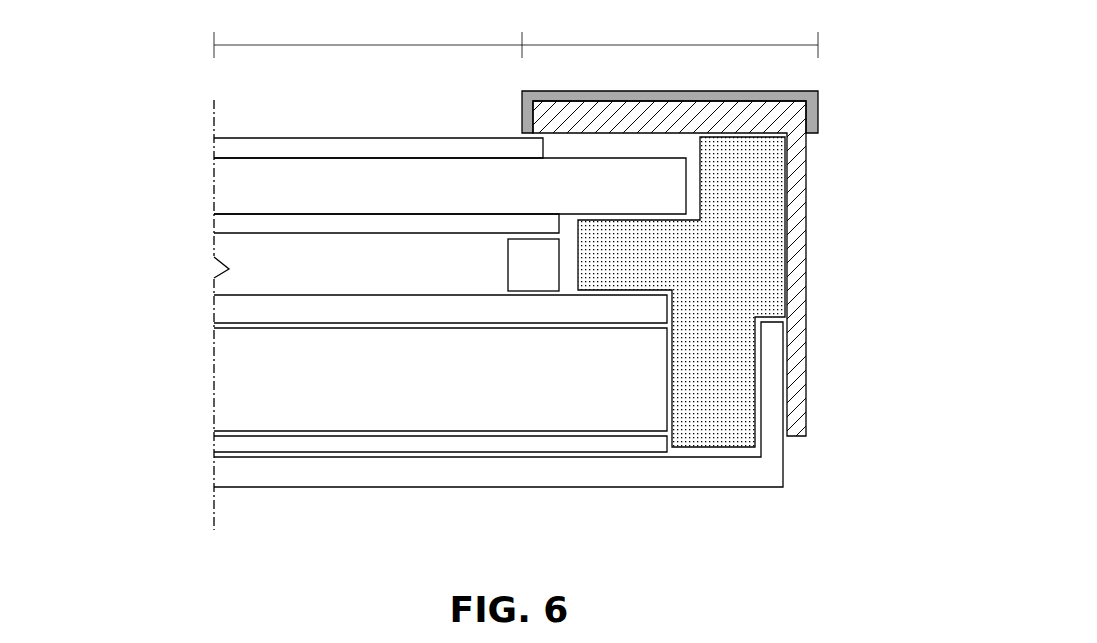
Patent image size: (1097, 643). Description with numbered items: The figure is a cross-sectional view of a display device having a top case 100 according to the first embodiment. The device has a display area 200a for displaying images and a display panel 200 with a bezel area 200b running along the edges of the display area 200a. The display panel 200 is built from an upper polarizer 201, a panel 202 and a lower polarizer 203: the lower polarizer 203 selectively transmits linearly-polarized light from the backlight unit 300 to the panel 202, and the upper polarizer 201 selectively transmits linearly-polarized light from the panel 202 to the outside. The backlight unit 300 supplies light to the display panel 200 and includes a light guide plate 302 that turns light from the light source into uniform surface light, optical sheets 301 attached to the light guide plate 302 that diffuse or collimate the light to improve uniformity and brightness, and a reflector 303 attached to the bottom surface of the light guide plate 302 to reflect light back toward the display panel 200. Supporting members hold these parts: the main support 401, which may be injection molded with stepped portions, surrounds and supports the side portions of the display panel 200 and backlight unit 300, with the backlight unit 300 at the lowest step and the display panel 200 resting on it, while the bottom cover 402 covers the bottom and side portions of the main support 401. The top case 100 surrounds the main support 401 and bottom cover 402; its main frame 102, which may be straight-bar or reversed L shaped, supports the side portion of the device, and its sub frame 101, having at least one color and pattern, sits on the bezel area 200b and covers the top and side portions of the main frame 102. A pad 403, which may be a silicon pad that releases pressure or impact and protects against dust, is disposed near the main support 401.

The top case 100 is at (733, 263).
The sub frame 101 is at (812, 112).
The main frame 102 is at (800, 176).
The display panel 200 is at (382, 188).
The display area 200a is at (368, 42).
The bezel area 200b is at (670, 42).
The upper polarizer 201 is at (240, 149).
The panel 202 is at (240, 184).
The lower polarizer 203 is at (240, 222).
The backlight unit 300 is at (369, 377).
The optical sheets 301 is at (242, 308).
The light guide plate 302 is at (235, 382).
The reflector 303 is at (240, 444).
The main support 401 is at (714, 430).
The bottom cover 402 is at (650, 474).
The pad 403 is at (510, 262).